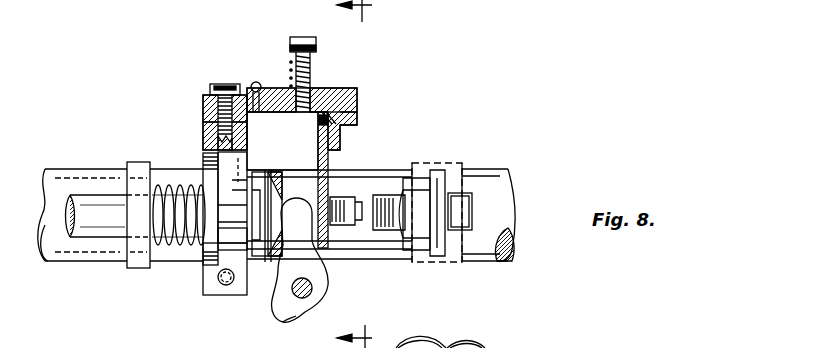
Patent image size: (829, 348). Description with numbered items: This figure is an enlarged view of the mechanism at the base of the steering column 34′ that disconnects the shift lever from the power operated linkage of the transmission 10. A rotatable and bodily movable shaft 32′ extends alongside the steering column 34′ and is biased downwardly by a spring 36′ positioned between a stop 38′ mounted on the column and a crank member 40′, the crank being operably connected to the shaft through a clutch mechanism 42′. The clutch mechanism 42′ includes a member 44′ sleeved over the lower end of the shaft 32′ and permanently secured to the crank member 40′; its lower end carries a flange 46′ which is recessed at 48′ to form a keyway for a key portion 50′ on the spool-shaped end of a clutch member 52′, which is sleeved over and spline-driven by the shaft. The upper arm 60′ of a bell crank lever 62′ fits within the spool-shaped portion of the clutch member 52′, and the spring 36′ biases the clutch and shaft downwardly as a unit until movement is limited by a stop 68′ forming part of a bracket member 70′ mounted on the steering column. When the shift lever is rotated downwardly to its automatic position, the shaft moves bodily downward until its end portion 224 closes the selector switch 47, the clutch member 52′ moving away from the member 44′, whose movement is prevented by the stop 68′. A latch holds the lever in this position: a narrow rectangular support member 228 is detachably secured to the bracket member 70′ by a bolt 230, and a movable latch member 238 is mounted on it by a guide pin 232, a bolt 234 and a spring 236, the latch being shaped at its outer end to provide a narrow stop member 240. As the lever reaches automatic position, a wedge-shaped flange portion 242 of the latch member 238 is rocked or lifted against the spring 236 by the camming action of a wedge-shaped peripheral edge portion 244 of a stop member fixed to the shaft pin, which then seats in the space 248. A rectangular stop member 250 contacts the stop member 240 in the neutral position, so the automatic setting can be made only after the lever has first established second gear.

The transmission 10 is at (366, 174).
The shaft 32′ is at (88, 200).
The steering column 34′ is at (494, 168).
The spring 36′ is at (172, 246).
The stop 38′ is at (131, 164).
The crank member 40′ is at (203, 162).
The clutch mechanism 42′ is at (256, 294).
The member 44′ is at (210, 250).
The flange 46′ is at (255, 176).
The selector switch 47 is at (404, 178).
The recess 48′ is at (278, 182).
The key portion 50′ is at (275, 195).
The clutch member 52′ is at (270, 265).
The upper arm 60′ is at (328, 280).
The bell crank lever 62′ is at (330, 302).
The stop 68′ is at (242, 143).
The bracket member 70′ is at (203, 122).
The end portion 224 is at (362, 173).
The support member 228 is at (203, 104).
The bolt 230 is at (208, 88).
The guide pin 232 is at (256, 82).
The bolt 234 is at (290, 65).
The spring 236 is at (292, 47).
The latch member 238 is at (318, 92).
The stop member 240 is at (357, 97).
The wedge-shaped flange portion 242 is at (330, 117).
The wedge-shaped peripheral edge portion 244 is at (319, 126).
The space 248 is at (356, 117).
The stop member 250 is at (338, 141).